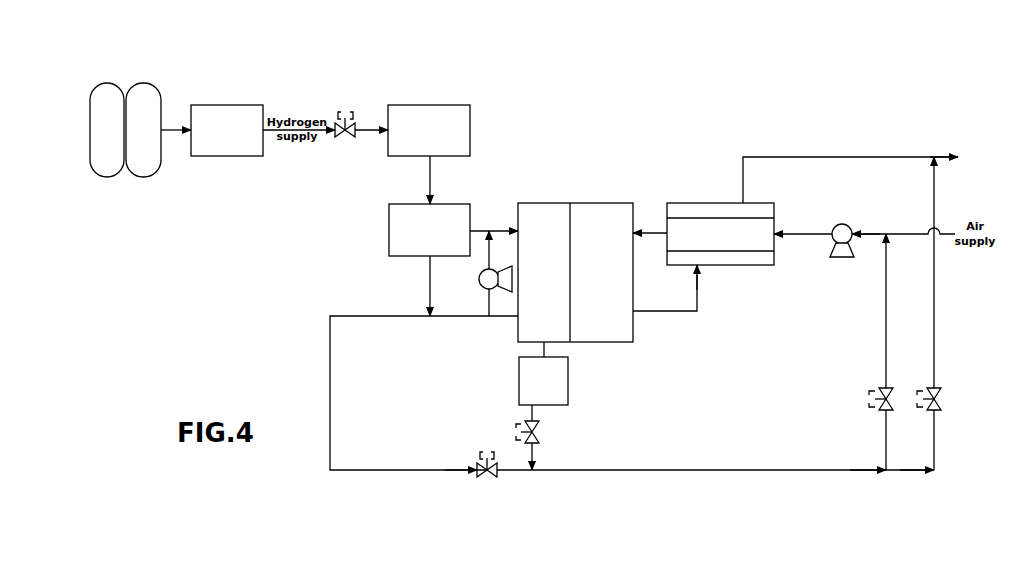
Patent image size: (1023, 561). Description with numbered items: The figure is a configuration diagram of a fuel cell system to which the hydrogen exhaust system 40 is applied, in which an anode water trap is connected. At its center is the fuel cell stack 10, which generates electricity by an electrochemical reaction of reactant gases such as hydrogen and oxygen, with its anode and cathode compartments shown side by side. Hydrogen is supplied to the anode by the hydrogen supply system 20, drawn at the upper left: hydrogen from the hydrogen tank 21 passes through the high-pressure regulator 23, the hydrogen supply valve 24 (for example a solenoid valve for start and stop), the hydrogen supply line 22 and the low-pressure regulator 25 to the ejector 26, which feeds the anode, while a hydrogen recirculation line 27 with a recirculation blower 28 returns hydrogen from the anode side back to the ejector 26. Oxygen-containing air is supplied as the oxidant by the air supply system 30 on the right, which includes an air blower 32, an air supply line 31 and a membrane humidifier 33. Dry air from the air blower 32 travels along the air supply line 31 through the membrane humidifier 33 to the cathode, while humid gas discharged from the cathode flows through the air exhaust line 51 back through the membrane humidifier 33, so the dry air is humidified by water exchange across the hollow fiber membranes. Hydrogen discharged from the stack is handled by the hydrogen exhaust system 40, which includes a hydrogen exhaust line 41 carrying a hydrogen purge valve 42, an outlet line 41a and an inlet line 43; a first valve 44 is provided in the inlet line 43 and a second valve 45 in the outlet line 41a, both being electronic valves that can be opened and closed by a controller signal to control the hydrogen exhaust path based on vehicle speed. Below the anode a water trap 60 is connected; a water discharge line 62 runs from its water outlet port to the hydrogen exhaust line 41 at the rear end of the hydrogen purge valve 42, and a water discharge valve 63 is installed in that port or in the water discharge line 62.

The fuel cell stack 10 is at (583, 201).
The hydrogen supply system 20 is at (425, 90).
The hydrogen tank 21 is at (158, 83).
The hydrogen supply line 22 is at (373, 128).
The high-pressure regulator 23 is at (226, 105).
The hydrogen supply valve 24 is at (346, 112).
The low-pressure regulator 25 is at (464, 105).
The ejector 26 is at (466, 204).
The hydrogen recirculation line 27 is at (488, 307).
The recirculation blower 28 is at (481, 287).
The air supply system 30 is at (746, 282).
The air supply line 31 is at (649, 228).
The air blower 32 is at (846, 223).
The membrane humidifier 33 is at (702, 203).
The hydrogen exhaust system 40 is at (712, 480).
The hydrogen exhaust line 41 is at (379, 315).
The outlet line 41a is at (933, 277).
The hydrogen purge valve 42 is at (484, 456).
The inlet line 43 is at (884, 348).
The first valve 44 is at (868, 400).
The second valve 45 is at (937, 388).
The air exhaust line 51 is at (793, 157).
The water trap 60 is at (568, 378).
The water discharge line 62 is at (533, 412).
The water discharge valve 63 is at (537, 440).